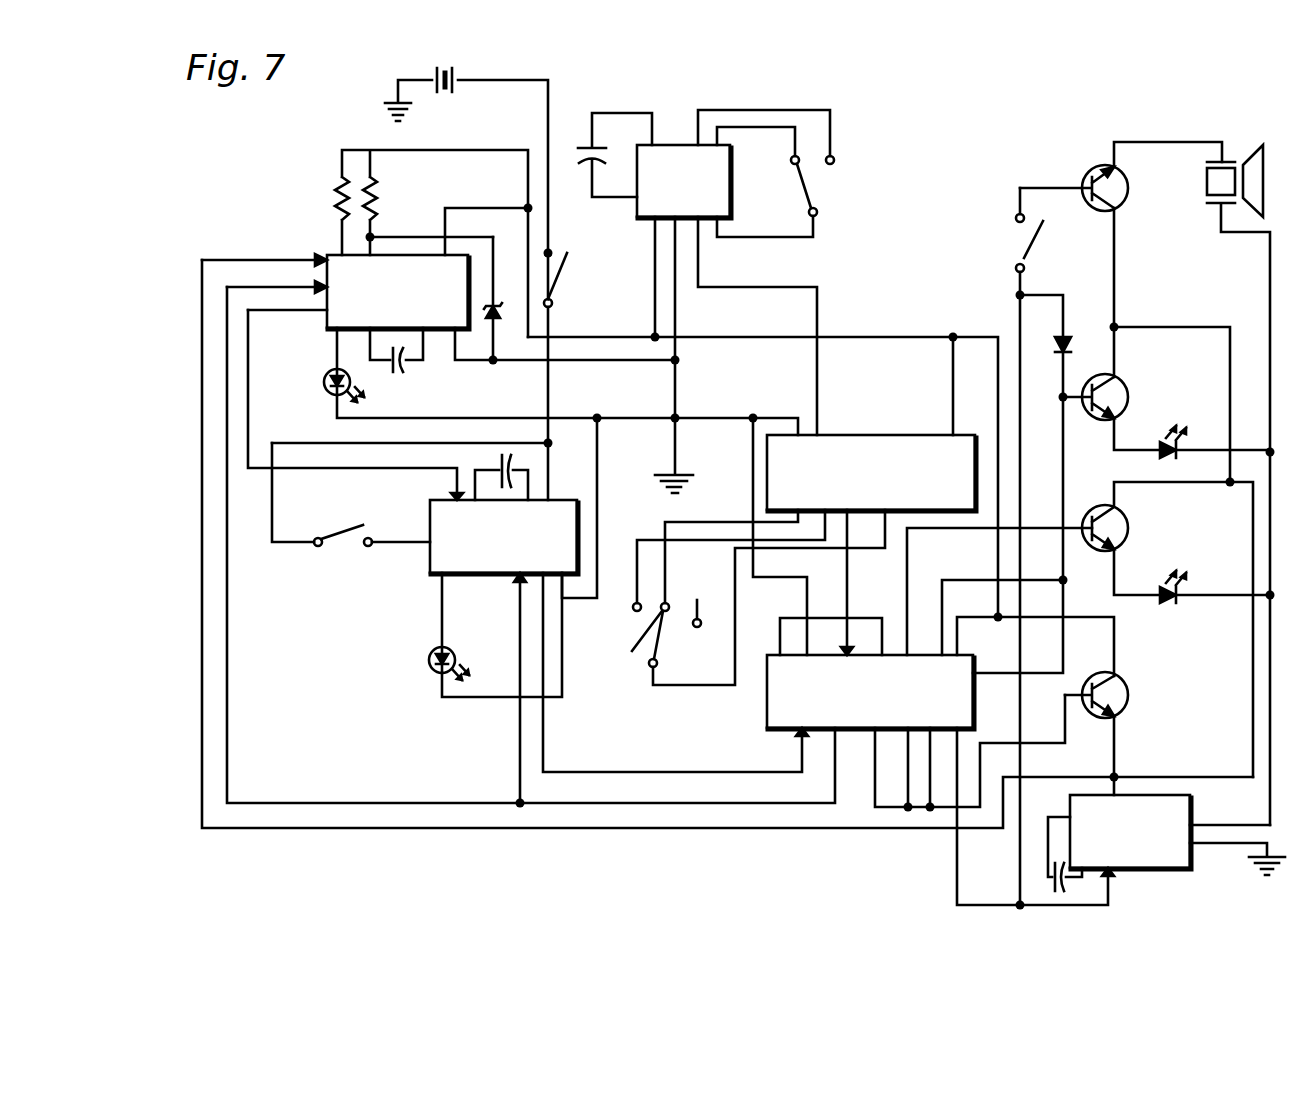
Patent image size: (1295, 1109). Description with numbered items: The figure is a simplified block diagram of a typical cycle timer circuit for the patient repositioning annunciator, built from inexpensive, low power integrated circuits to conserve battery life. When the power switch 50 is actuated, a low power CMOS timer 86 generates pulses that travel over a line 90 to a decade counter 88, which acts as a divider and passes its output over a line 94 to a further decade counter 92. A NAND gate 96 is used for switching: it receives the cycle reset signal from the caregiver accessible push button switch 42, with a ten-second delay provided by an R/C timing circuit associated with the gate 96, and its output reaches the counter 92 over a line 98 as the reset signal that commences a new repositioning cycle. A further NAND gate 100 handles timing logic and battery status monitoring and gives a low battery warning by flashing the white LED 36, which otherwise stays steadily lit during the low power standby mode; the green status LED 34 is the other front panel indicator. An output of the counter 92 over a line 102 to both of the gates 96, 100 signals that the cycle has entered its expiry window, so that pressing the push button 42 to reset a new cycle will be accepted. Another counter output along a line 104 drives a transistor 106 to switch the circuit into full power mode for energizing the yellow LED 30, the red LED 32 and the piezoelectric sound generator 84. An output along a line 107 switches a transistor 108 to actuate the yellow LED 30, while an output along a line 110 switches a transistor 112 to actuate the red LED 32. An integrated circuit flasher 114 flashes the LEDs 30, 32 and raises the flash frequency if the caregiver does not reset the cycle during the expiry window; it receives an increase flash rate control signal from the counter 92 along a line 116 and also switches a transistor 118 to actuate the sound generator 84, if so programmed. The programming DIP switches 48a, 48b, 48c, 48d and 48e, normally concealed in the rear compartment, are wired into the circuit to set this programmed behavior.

The yellow LED 30 is at (1167, 608).
The red LED 32 is at (1157, 444).
The status indicator LED 34 is at (427, 650).
The white LED 36 is at (351, 380).
The timing cycle reset switch 42 is at (345, 532).
The programming DIP switch 48a is at (633, 605).
The programming DIP switch 48b is at (630, 647).
The programming DIP switch 48c is at (701, 626).
The programming DIP switch 48d is at (1028, 246).
The programming DIP switch 48e is at (823, 186).
The power switch 50 is at (560, 257).
The piezoelectric sound generator 84 is at (1248, 155).
The CMOS timer 86 is at (670, 145).
The decade counter 88 is at (900, 435).
The line 90 is at (765, 287).
The decade counter 92 is at (767, 698).
The line 94 is at (847, 580).
The NAND gate 96 is at (430, 560).
The line 98 is at (633, 772).
The NAND gate 100 is at (326, 252).
The line 102 is at (672, 803).
The line 104 is at (932, 812).
The transistor 106 is at (1128, 700).
The line 107 is at (988, 535).
The transistor 108 is at (1128, 525).
The line 110 is at (946, 585).
The transistor 112 is at (1102, 423).
The integrated circuit flasher 114 is at (1178, 858).
The line 116 is at (977, 913).
The transistor 118 is at (1095, 172).